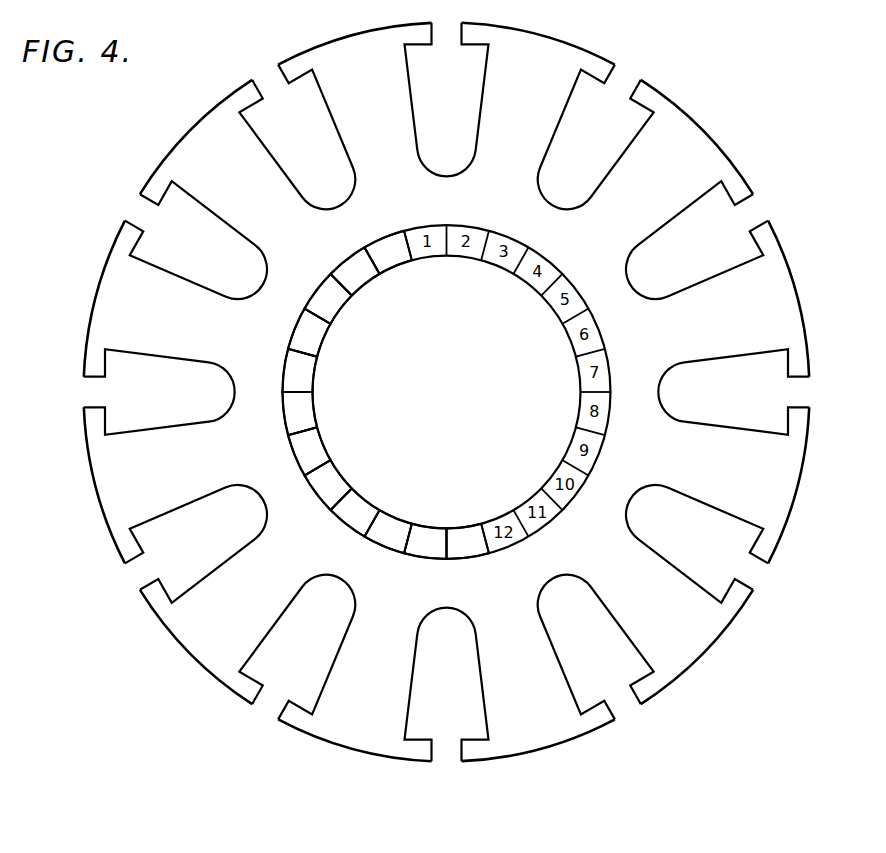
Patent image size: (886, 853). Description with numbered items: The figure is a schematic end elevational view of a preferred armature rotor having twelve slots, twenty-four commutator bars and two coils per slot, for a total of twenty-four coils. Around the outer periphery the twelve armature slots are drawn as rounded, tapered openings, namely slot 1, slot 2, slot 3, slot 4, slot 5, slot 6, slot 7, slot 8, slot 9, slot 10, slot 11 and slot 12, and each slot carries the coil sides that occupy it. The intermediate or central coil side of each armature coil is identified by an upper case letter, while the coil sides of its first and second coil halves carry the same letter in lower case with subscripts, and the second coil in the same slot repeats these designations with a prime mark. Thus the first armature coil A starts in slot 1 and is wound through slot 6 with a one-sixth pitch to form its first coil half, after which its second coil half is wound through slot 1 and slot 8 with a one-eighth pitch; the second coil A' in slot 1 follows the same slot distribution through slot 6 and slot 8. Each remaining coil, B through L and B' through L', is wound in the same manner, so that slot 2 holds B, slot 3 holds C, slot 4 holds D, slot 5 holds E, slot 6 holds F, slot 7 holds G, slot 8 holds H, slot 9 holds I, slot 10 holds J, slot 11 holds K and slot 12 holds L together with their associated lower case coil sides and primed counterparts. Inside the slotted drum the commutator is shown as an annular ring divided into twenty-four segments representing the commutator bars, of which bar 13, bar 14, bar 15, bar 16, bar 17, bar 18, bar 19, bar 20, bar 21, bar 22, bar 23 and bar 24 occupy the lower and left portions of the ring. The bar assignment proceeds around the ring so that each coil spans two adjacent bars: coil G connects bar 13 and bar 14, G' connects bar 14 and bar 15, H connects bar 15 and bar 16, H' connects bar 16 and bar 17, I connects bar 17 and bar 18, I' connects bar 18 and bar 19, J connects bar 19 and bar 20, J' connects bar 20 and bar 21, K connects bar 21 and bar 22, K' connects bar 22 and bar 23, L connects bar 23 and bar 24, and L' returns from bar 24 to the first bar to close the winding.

The slot 1 is at (446, 88).
The slot 2 is at (590, 137).
The slot 3 is at (698, 245).
The slot 4 is at (745, 392).
The slot 5 is at (695, 538).
The slot 6 is at (590, 648).
The slot 7 is at (446, 697).
The slot 8 is at (303, 651).
The slot 9 is at (195, 538).
The slot 10 is at (142, 392).
The slot 11 is at (191, 245).
The slot 12 is at (303, 137).
The commutator bar 13 is at (464, 541).
The commutator bar 14 is at (425, 541).
The commutator bar 15 is at (388, 530).
The commutator bar 16 is at (355, 510).
The commutator bar 17 is at (328, 482).
The commutator bar 18 is at (308, 447).
The commutator bar 19 is at (299, 409).
The commutator bar 20 is at (300, 370).
The commutator bar 21 is at (310, 332).
The commutator bar 22 is at (329, 298).
The commutator bar 23 is at (358, 270).
The commutator bar 24 is at (392, 252).